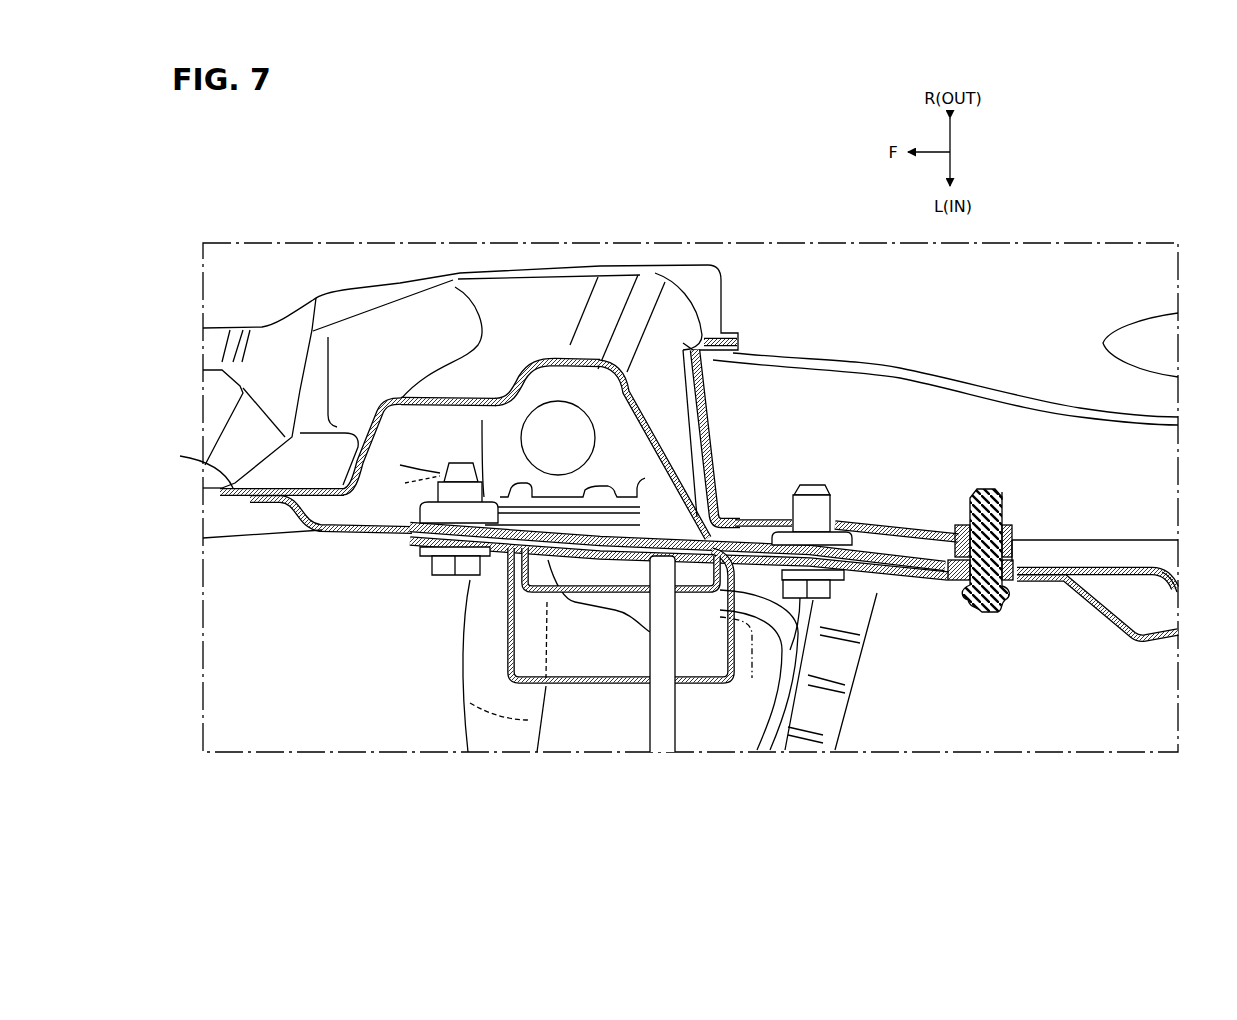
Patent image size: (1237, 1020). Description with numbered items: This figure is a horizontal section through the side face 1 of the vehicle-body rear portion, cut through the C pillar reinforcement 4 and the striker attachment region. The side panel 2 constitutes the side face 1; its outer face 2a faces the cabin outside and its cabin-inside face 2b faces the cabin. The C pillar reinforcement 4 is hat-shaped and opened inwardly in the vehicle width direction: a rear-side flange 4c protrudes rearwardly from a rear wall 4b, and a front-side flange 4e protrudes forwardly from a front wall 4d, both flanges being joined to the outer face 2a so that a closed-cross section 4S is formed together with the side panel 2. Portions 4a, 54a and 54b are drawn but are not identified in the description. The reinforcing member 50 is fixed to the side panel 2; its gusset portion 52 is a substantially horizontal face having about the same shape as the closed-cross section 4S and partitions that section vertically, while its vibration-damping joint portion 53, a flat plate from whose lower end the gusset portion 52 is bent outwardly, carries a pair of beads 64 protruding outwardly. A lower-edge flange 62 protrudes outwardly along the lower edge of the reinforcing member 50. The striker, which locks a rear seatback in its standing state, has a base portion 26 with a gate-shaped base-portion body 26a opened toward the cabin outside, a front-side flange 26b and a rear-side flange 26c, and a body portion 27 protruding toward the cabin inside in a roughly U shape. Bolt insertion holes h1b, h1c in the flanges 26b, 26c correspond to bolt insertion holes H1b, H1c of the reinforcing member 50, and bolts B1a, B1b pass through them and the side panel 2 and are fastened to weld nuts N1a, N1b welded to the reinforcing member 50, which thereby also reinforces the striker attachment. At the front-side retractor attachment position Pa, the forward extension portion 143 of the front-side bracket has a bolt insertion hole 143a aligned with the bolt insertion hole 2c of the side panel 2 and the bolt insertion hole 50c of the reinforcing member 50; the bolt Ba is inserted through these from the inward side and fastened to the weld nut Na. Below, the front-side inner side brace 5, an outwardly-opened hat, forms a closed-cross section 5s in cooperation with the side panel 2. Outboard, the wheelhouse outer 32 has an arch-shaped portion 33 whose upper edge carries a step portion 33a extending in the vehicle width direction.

The side face 1 is at (665, 217).
The C pillar reinforcement 4 is at (463, 272).
The upper flange of bracket 4a is at (447, 399).
The rear wall 4b is at (672, 423).
The rear-side flange 4c is at (737, 521).
The front wall 4d is at (370, 422).
The front-side flange 4e is at (257, 411).
The closed-cross section 4S is at (428, 455).
The weld nut N1a is at (362, 490).
The weld nut N1b is at (850, 522).
The bolt insertion hole H1b is at (410, 531).
The bolt insertion hole H1c is at (867, 586).
The bolt insertion hole h1b is at (440, 575).
The bolt insertion hole h1c is at (833, 598).
The bolt B1a is at (445, 578).
The bolt B1b is at (832, 600).
The side panel 2 is at (1165, 574).
The outer face 2a is at (1118, 540).
The cabin-inside face 2b is at (1160, 584).
The bolt insertion hole 2c is at (1014, 551).
The front-side inner side brace 5 is at (856, 705).
The closed-cross section 5s is at (752, 730).
The base portion 26 is at (507, 652).
The base-portion body 26a is at (574, 681).
The front-side flange 26b is at (428, 556).
The rear-side flange 26c is at (773, 632).
The body portion 27 is at (683, 752).
The wheelhouse outer 32 is at (1108, 238).
The arch-shaped portion 33 is at (1013, 266).
The step portion 33a is at (815, 386).
The reinforcing member 50 is at (686, 531).
The bolt insertion hole 50c is at (955, 541).
The gusset portion 52 is at (590, 348).
The vibration-damping joint portion 53 is at (535, 481).
The bolt 54a is at (386, 564).
The bolt 54b is at (813, 470).
The lower-edge flange 62 is at (878, 530).
The beads 64 is at (491, 497).
The forward extension portion 143 is at (1113, 626).
The bolt insertion hole 143a is at (1000, 591).
The bolt Ba is at (982, 490).
The weld nut Na is at (1013, 541).
The front-side retractor attachment position Pa is at (1016, 496).